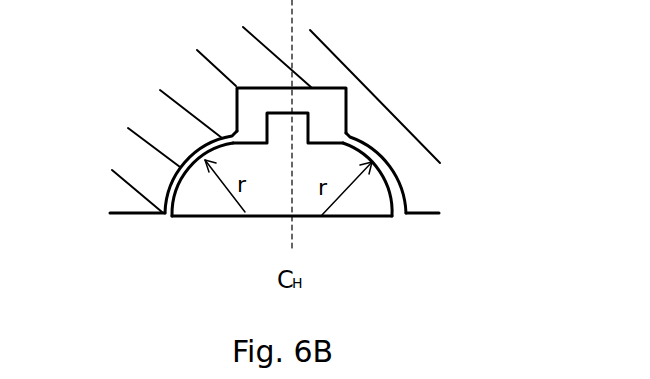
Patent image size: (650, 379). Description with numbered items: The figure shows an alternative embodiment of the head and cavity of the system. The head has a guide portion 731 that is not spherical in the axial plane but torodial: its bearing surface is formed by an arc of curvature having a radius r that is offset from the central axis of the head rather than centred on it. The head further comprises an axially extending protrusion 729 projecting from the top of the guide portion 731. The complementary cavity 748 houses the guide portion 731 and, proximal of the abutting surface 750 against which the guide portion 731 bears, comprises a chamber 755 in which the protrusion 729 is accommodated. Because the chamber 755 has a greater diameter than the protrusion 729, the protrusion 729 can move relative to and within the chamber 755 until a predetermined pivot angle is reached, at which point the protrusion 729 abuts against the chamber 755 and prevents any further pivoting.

The chamber 755 is at (257, 85).
The axially extending protrusion 729 is at (298, 130).
The abutting surface 750 is at (400, 170).
The guide portion 731 is at (200, 204).
The complementary cavity 748 is at (408, 220).